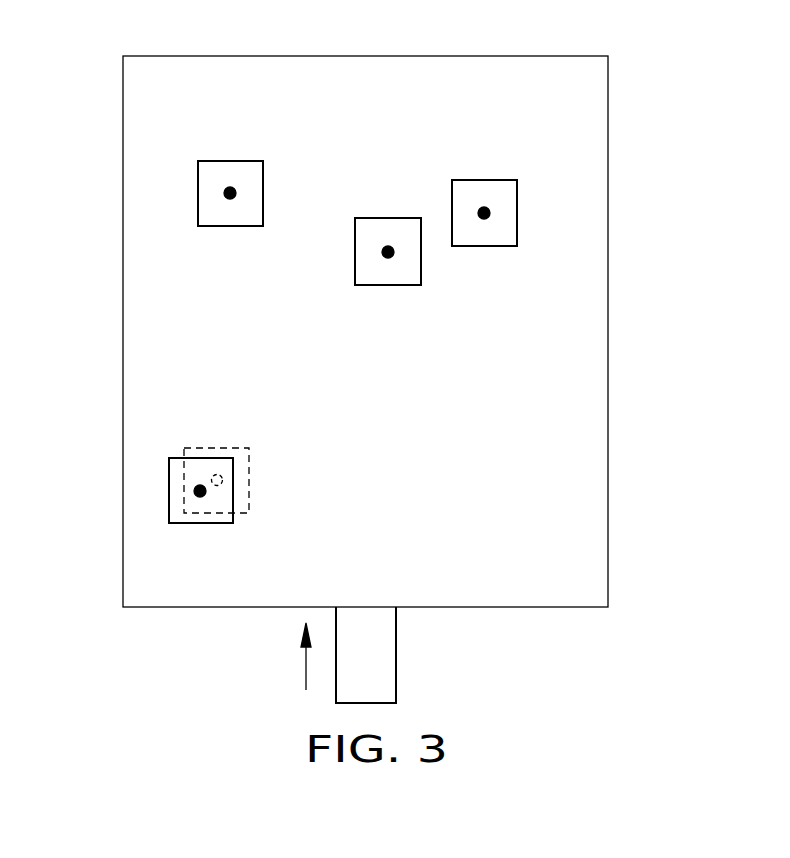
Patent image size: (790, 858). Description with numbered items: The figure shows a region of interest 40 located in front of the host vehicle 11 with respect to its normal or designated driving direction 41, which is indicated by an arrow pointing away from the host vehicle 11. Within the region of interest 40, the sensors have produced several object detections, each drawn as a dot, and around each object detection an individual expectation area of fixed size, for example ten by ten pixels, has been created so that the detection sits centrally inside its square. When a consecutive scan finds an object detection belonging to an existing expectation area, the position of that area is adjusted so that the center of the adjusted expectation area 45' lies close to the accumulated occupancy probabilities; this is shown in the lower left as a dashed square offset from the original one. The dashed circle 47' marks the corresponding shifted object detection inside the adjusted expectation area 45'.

The region of interest 40 is at (572, 56).
The adjusted expectation area 45' is at (137, 432).
The shifted target point (dashed) 47' is at (137, 446).
The driving direction 41 is at (306, 673).
The host vehicle 11 is at (396, 659).